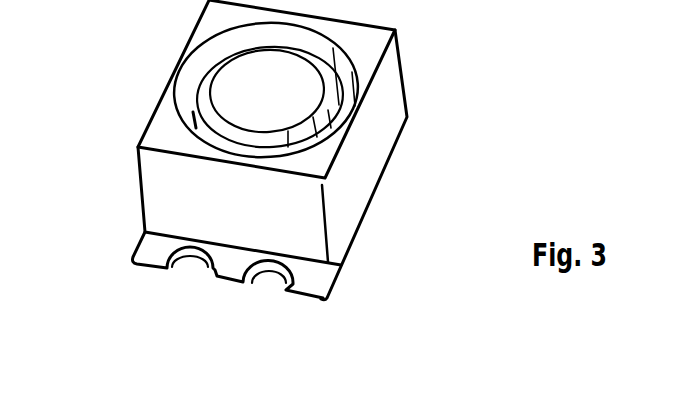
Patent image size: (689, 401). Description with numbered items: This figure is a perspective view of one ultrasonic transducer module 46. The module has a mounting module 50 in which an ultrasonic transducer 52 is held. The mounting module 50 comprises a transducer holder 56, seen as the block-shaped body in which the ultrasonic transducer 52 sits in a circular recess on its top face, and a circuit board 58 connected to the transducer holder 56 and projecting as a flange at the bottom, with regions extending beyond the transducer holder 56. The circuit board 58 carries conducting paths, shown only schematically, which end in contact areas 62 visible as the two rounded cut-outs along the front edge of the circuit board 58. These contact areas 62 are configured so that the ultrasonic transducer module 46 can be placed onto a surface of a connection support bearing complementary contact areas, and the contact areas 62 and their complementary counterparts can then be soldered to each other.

The ultrasonic transducer module 46 is at (452, 124).
The mounting module 50 is at (198, 33).
The ultrasonic transducer 52 is at (227, 93).
The transducer holder 56 is at (363, 167).
The circuit board 58 is at (137, 245).
The contact areas 62 is at (266, 273).